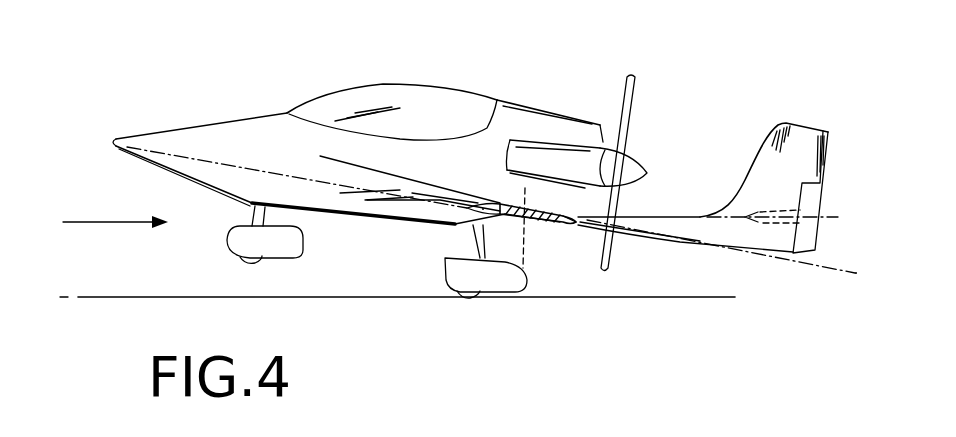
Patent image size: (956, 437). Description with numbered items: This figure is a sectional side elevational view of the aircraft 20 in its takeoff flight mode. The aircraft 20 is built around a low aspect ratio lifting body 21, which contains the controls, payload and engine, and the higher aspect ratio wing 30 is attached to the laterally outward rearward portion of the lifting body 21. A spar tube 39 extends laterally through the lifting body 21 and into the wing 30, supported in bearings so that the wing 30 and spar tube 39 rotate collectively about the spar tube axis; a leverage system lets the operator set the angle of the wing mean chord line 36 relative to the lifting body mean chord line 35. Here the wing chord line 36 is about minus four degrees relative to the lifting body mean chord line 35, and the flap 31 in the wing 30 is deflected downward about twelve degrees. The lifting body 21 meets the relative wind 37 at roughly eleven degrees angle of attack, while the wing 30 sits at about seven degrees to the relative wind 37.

The aircraft 20 is at (243, 72).
The lifting body 21 is at (255, 156).
The wing 30 is at (537, 222).
The flap 31 is at (570, 222).
The lifting body mean chord line 35 is at (352, 187).
The wing mean chord line 36 is at (387, 200).
The relative wind 37 is at (106, 222).
The spar tube 39 is at (520, 205).